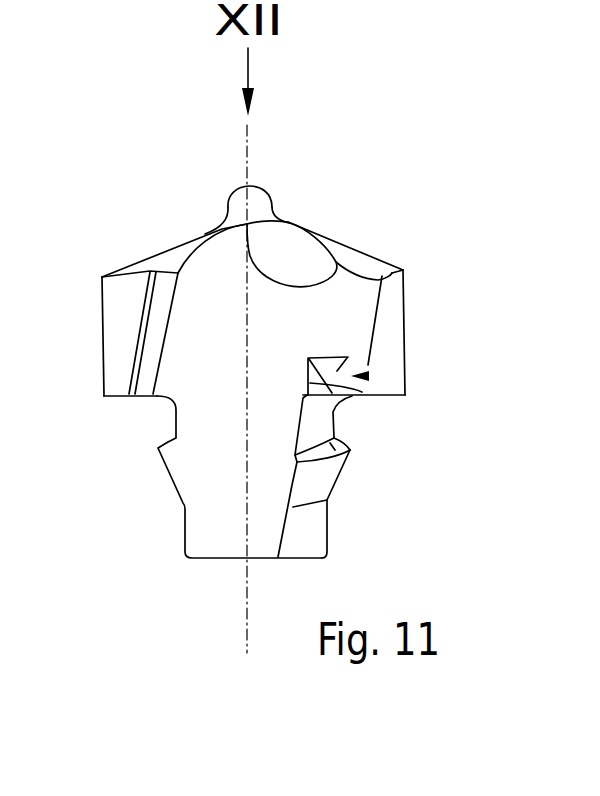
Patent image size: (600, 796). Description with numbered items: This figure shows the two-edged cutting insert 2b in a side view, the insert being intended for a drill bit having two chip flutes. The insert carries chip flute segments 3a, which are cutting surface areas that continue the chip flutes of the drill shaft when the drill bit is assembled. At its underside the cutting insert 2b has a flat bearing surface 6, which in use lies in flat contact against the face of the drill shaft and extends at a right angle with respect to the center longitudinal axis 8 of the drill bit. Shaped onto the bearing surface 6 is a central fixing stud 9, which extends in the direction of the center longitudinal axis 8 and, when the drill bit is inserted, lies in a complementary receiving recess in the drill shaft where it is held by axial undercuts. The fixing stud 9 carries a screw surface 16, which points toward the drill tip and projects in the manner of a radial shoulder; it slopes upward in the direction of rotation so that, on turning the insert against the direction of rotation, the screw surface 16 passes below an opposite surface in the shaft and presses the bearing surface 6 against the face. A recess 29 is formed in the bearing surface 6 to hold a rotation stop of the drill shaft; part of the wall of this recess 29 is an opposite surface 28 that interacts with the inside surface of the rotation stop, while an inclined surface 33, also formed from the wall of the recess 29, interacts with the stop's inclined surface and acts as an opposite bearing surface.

The two-edged cutting insert 2b is at (162, 238).
The chip flute segment 3a is at (217, 378).
The bearing surface 6 is at (115, 396).
The center longitudinal axis 8 is at (246, 602).
The fixing stud 9 is at (312, 533).
The screw surface 16 is at (340, 443).
The opposite surface 28 is at (357, 397).
The recess 29 is at (368, 376).
The inclined surface 33 is at (347, 358).